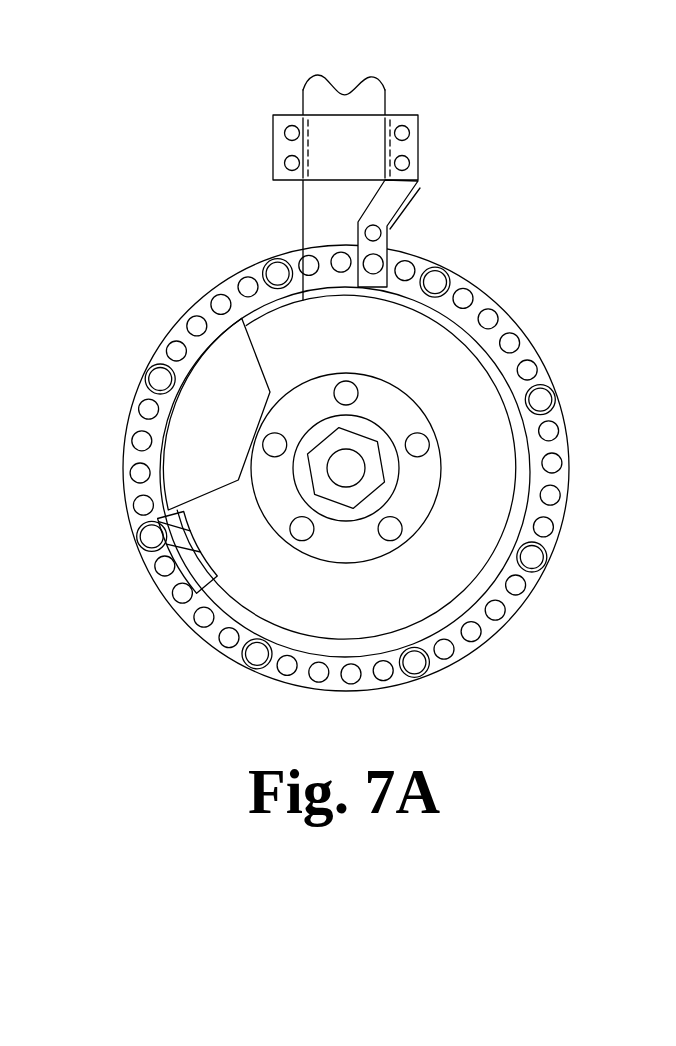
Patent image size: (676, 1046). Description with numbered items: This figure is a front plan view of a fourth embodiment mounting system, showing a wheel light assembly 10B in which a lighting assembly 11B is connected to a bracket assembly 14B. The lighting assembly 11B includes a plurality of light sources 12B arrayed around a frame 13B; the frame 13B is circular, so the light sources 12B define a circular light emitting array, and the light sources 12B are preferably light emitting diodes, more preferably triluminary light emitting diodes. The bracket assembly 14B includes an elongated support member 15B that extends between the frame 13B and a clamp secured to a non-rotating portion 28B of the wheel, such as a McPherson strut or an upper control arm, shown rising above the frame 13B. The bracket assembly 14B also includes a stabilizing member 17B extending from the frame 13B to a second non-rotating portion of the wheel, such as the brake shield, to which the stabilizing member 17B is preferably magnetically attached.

The wheel light assembly 10B is at (500, 705).
The lighting assembly 11B is at (541, 342).
The light sources 12B is at (541, 403).
The frame 13B is at (568, 462).
The bracket assembly 14B is at (138, 540).
The elongated support member 15B is at (426, 208).
The stabilizing member 17B is at (208, 582).
The non-rotating portion of the wheel 28B is at (388, 91).